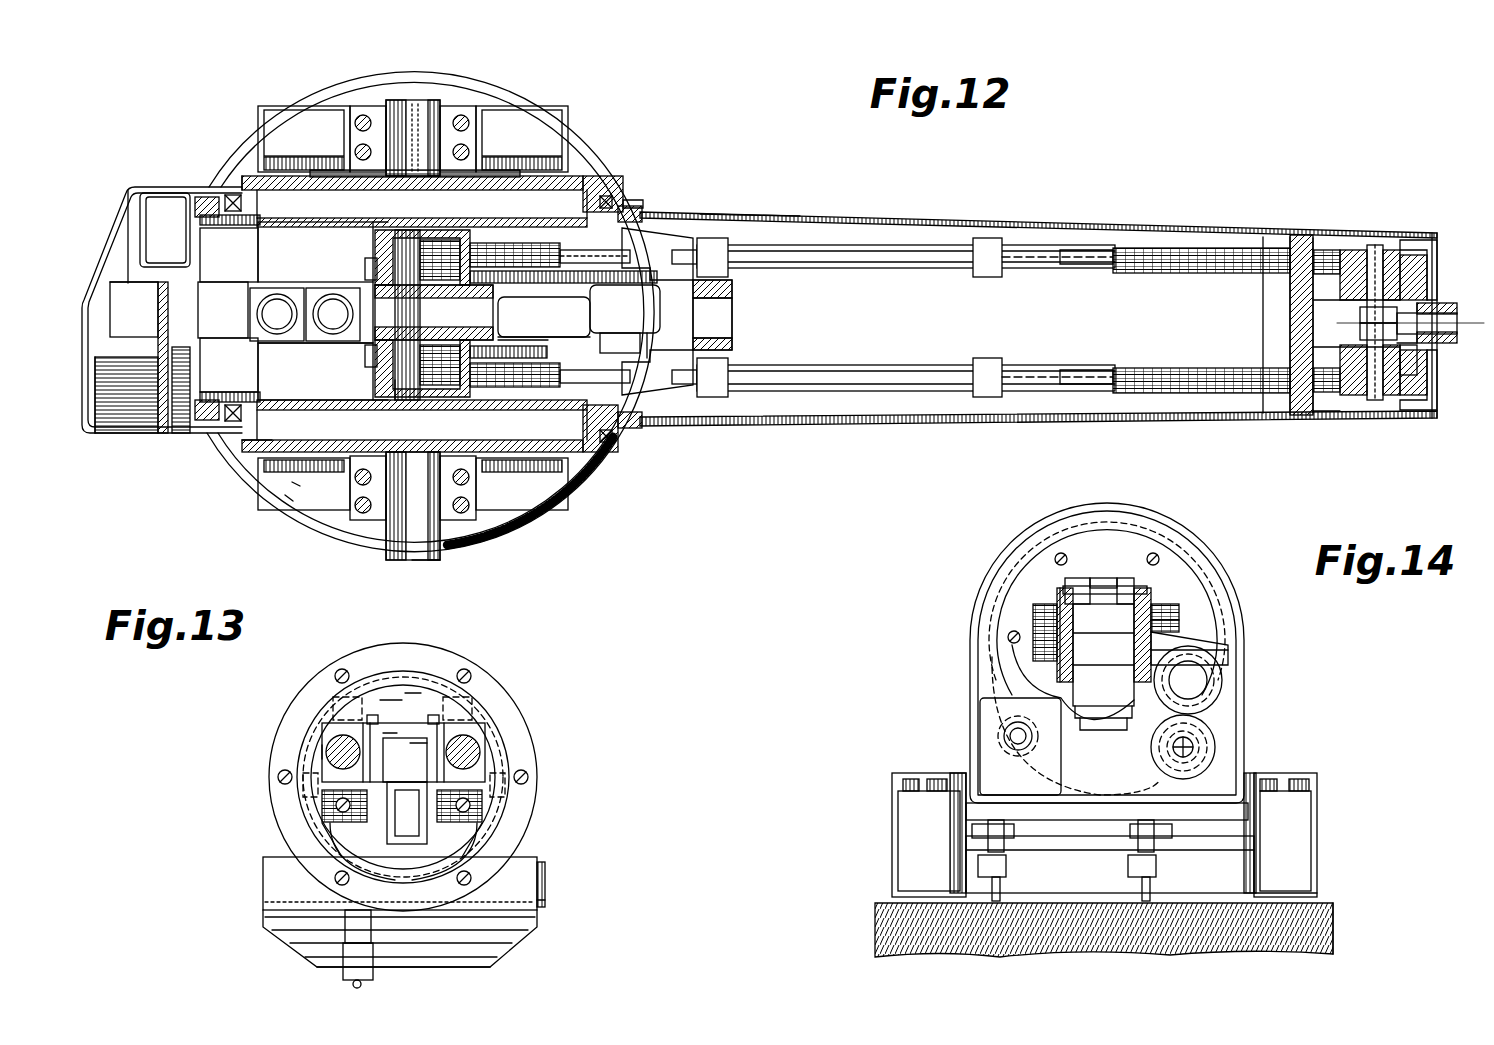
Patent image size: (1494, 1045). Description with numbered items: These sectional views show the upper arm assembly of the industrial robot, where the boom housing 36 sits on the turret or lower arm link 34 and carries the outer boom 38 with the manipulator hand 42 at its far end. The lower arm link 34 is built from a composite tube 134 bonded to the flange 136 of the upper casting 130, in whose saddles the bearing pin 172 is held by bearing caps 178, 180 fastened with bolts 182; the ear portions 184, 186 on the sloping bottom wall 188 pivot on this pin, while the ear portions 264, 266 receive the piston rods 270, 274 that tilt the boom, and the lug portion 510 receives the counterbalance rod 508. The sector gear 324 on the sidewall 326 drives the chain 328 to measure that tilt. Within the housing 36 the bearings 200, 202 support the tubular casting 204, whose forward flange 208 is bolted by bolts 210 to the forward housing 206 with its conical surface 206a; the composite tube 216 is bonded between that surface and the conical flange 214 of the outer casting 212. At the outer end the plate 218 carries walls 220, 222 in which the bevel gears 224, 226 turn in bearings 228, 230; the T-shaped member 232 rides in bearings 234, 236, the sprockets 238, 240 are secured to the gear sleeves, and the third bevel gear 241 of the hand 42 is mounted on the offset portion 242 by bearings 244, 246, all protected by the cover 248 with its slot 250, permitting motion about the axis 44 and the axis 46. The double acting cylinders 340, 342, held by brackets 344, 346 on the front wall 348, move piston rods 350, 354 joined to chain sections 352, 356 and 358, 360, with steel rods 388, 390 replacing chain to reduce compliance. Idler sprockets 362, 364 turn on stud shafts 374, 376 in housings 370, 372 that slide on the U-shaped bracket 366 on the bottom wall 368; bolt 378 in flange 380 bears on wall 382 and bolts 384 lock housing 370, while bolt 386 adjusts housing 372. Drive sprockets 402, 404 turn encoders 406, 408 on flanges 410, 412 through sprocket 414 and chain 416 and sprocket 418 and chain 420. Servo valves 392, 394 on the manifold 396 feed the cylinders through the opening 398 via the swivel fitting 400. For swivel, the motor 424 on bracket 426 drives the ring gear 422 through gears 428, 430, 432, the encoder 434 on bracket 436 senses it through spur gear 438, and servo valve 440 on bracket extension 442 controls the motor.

In FIG. 12, the turret or lower arm link 34 is at (560, 518).
In FIG. 14, the turret or lower arm link 34 is at (1330, 934).
In FIG. 12, the boom housing 36 is at (282, 175).
In FIG. 13, the boom housing 36 is at (508, 690).
In FIG. 14, the boom housing 36 is at (1122, 498).
In FIG. 12, the outer boom 38 is at (950, 217).
In FIG. 13, the outer boom 38 is at (288, 713).
In FIG. 12, the manipulator hand member 42 is at (1390, 238).
In FIG. 12, the axis 44 is at (1378, 242).
In FIG. 12, the axis 46 is at (1462, 310).
In FIG. 12, the upper casting 130 is at (297, 485).
In FIG. 14, the upper casting 130 is at (1317, 881).
In FIG. 12, the tube 134 is at (440, 558).
In FIG. 14, the tube 134 is at (1069, 930).
In FIG. 12, the downturned annular flange 136 is at (250, 170).
In FIG. 13, the bearing pin 172 is at (473, 967).
In FIG. 14, the bearing pin 172 is at (1071, 828).
In FIG. 12, the bearing cap 178 is at (413, 105).
In FIG. 14, the bearing cap 178 is at (903, 800).
In FIG. 12, the bearing cap 180 is at (408, 512).
In FIG. 14, the bearing cap 180 is at (1317, 779).
In FIG. 12, the bolts 182 is at (470, 478).
In FIG. 14, the bolts 182 is at (1305, 775).
In FIG. 14, the depending ear portion 184 is at (972, 845).
In FIG. 12, the depending ear portion 186 is at (420, 463).
In FIG. 14, the depending ear portion 186 is at (1260, 848).
In FIG. 12, the sloping bottom wall portion 188 is at (265, 447).
In FIG. 13, the sloping bottom wall portion 188 is at (513, 920).
In FIG. 12, the bearing 200 is at (235, 185).
In FIG. 12, the bearing 202 is at (540, 185).
In FIG. 12, the tubular casting 204 is at (290, 499).
In FIG. 12, the forward cast housing or bulkhead 206 is at (640, 225).
In FIG. 13, the forward cast housing or bulkhead 206 is at (377, 657).
In FIG. 12, the tapered outer conical surface 206a is at (635, 210).
In FIG. 12, the forward end flange 208 is at (582, 195).
In FIG. 12, the bolts 210 is at (619, 436).
In FIG. 13, the bolts 210 is at (520, 780).
In FIG. 12, the outer casting 212 is at (1290, 307).
In FIG. 12, the tapered conical annular flange 214 is at (1270, 240).
In FIG. 12, the tube 216 is at (817, 215).
In FIG. 13, the tube 216 is at (327, 753).
In FIG. 12, the plate 218 is at (1307, 323).
In FIG. 12, the wall portion 220 is at (1433, 237).
In FIG. 12, the wall portion 222 is at (1433, 407).
In FIG. 12, the beveled gear 224 is at (1297, 287).
In FIG. 12, the beveled gear 226 is at (1327, 345).
In FIG. 12, the bearing 228 is at (1400, 237).
In FIG. 12, the bearing 230 is at (1407, 367).
In FIG. 12, the T-shaped member 232 is at (1372, 400).
In FIG. 12, the bearing 234 is at (1358, 309).
In FIG. 12, the bearing 236 is at (1360, 340).
In FIG. 12, the sprocket 238 is at (1360, 250).
In FIG. 12, the sprocket 240 is at (1367, 407).
In FIG. 12, the third bevelled gear 241 is at (1435, 303).
In FIG. 12, the offset portion 242 is at (1430, 312).
In FIG. 12, the bearing 244 is at (1433, 347).
In FIG. 12, the bearing 246 is at (1427, 345).
In FIG. 12, the cover 248 is at (1327, 417).
In FIG. 12, the slot 250 is at (1420, 370).
In FIG. 14, the depending ear portions 264 is at (1163, 844).
In FIG. 13, the depending ear portions 266 is at (343, 952).
In FIG. 14, the piston rod 270 is at (1143, 889).
In FIG. 13, the piston rod 274 is at (350, 977).
In FIG. 12, the large sprocket or sector gear 324 is at (480, 165).
In FIG. 13, the large sprocket or sector gear 324 is at (545, 887).
In FIG. 14, the large sprocket or sector gear 324 is at (957, 738).
In FIG. 12, the sidewall 326 is at (277, 175).
In FIG. 12, the chain 328 is at (495, 172).
In FIG. 13, the chain 328 is at (545, 903).
In FIG. 14, the chain 328 is at (957, 716).
In FIG. 12, the double acting hydraulic cylinder 340 is at (913, 243).
In FIG. 13, the double acting hydraulic cylinder 340 is at (482, 747).
In FIG. 12, the double acting cylinder 342 is at (885, 395).
In FIG. 13, the double acting cylinder 342 is at (323, 737).
In FIG. 13, the bracket 344 is at (400, 727).
In FIG. 12, the bracket 346 is at (728, 298).
In FIG. 13, the bracket 346 is at (403, 777).
In FIG. 12, the front wall 348 is at (643, 423).
In FIG. 13, the front wall 348 is at (413, 693).
In FIG. 12, the double acting piston rod 350 is at (1030, 257).
In FIG. 12, the drive chain section 352 is at (1213, 247).
In FIG. 12, the double acting piston rod 354 is at (1037, 385).
In FIG. 12, the chain drive section 356 is at (1232, 393).
In FIG. 12, the drive chain portion 358 is at (505, 270).
In FIG. 13, the drive chain portion 358 is at (477, 800).
In FIG. 14, the drive chain portion 358 is at (1053, 592).
In FIG. 12, the drive chain portion 360 is at (515, 385).
In FIG. 13, the drive chain portion 360 is at (360, 800).
In FIG. 14, the drive chain portion 360 is at (1191, 608).
In FIG. 12, the idler sprocket 362 is at (410, 228).
In FIG. 14, the idler sprocket 362 is at (1033, 618).
In FIG. 12, the idler sprocket 364 is at (375, 394).
In FIG. 14, the idler sprocket 364 is at (1191, 612).
In FIG. 12, the U-shaped bracket 366 is at (373, 328).
In FIG. 13, the U-shaped bracket 366 is at (408, 823).
In FIG. 14, the U-shaped bracket 366 is at (1100, 596).
In FIG. 12, the flat bottom wall portion 368 is at (262, 273).
In FIG. 13, the flat bottom wall portion 368 is at (413, 843).
In FIG. 14, the flat bottom wall portion 368 is at (1098, 690).
In FIG. 12, the housing 370 is at (375, 231).
In FIG. 13, the housing 370 is at (460, 867).
In FIG. 14, the housing 370 is at (1073, 588).
In FIG. 12, the housing 372 is at (340, 398).
In FIG. 13, the housing 372 is at (377, 853).
In FIG. 14, the housing 372 is at (1130, 588).
In FIG. 12, the stud shaft 374 is at (410, 228).
In FIG. 12, the stud shaft 376 is at (396, 385).
In FIG. 12, the bolt 378 is at (522, 240).
In FIG. 12, the inwardly extending flange portion 380 is at (500, 262).
In FIG. 12, the wall 382 is at (434, 312).
In FIG. 12, the bolts 384 is at (508, 316).
In FIG. 12, the adjustment bolt 386 is at (494, 390).
In FIG. 12, the steel rod 388 is at (1098, 257).
In FIG. 13, the steel rod 388 is at (467, 823).
In FIG. 12, the steel rod 390 is at (1090, 387).
In FIG. 13, the steel rod 390 is at (350, 820).
In FIG. 12, the servo valve 392 is at (272, 300).
In FIG. 12, the servo valve 394 is at (325, 295).
In FIG. 12, the manifold 396 is at (304, 345).
In FIG. 12, the opening 398 is at (647, 343).
In FIG. 13, the opening 398 is at (385, 700).
In FIG. 12, the dual swivel fitting 400 is at (183, 312).
In FIG. 12, the drive sprocket 402 is at (371, 263).
In FIG. 14, the drive sprocket 402 is at (1075, 647).
In FIG. 12, the drive sprocket 404 is at (396, 353).
In FIG. 14, the drive sprocket 404 is at (1103, 655).
In FIG. 12, the rotary encoder 406 is at (687, 303).
In FIG. 13, the rotary encoder 406 is at (417, 743).
In FIG. 12, the rotary encoder 408 is at (683, 330).
In FIG. 13, the rotary encoder 408 is at (392, 733).
In FIG. 12, the forwardly extending flange portion 410 is at (599, 276).
In FIG. 13, the forwardly extending flange portion 410 is at (453, 848).
In FIG. 12, the forwardly extending flange portion 412 is at (522, 345).
In FIG. 13, the forwardly extending flange portion 412 is at (343, 857).
In FIG. 12, the sprocket 414 is at (643, 273).
In FIG. 12, the chain 416 is at (635, 262).
In FIG. 13, the chain 416 is at (443, 843).
In FIG. 14, the chain 416 is at (1065, 604).
In FIG. 12, the sprocket 418 is at (546, 353).
In FIG. 12, the chain 420 is at (515, 350).
In FIG. 13, the chain 420 is at (360, 843).
In FIG. 14, the chain 420 is at (1167, 592).
In FIG. 12, the ring gear 422 is at (215, 197).
In FIG. 14, the ring gear 422 is at (1155, 633).
In FIG. 12, the drive motor 424 is at (110, 420).
In FIG. 14, the drive motor 424 is at (1228, 673).
In FIG. 12, the bracket 426 is at (163, 423).
In FIG. 12, the gear 428 is at (180, 390).
In FIG. 14, the gear 428 is at (1236, 714).
In FIG. 12, the gear 430 is at (162, 352).
In FIG. 14, the gear 430 is at (1238, 712).
In FIG. 12, the gear 432 is at (186, 374).
In FIG. 14, the gear 432 is at (1226, 740).
In FIG. 12, the rotary encoder 434 is at (143, 213).
In FIG. 14, the rotary encoder 434 is at (1163, 791).
In FIG. 12, the bracket 436 is at (210, 205).
In FIG. 14, the bracket 436 is at (1069, 795).
In FIG. 12, the spur gear 438 is at (180, 253).
In FIG. 14, the spur gear 438 is at (1004, 714).
In FIG. 12, the servo valve 440 is at (123, 290).
In FIG. 14, the servo valve 440 is at (1102, 712).
In FIG. 12, the bracket extension 442 is at (143, 283).
In FIG. 14, the bracket extension 442 is at (1179, 623).
In FIG. 14, the rod 508 is at (996, 877).
In FIG. 14, the lug portion 510 is at (1008, 844).